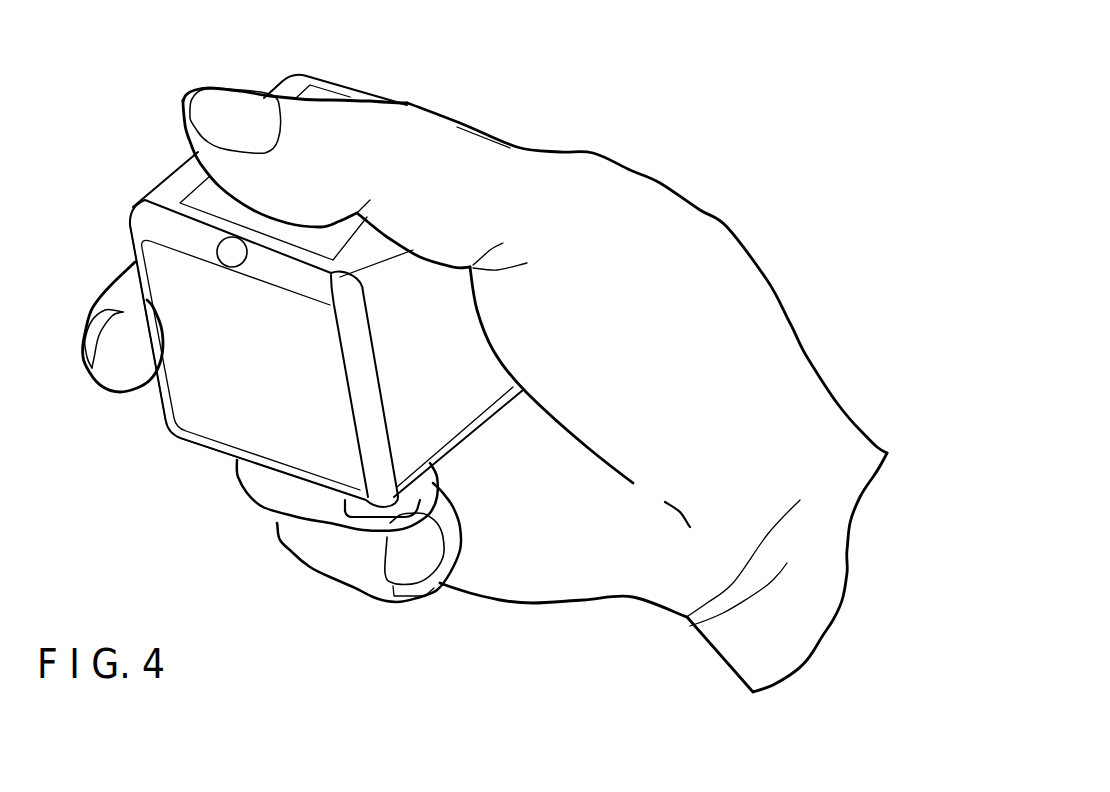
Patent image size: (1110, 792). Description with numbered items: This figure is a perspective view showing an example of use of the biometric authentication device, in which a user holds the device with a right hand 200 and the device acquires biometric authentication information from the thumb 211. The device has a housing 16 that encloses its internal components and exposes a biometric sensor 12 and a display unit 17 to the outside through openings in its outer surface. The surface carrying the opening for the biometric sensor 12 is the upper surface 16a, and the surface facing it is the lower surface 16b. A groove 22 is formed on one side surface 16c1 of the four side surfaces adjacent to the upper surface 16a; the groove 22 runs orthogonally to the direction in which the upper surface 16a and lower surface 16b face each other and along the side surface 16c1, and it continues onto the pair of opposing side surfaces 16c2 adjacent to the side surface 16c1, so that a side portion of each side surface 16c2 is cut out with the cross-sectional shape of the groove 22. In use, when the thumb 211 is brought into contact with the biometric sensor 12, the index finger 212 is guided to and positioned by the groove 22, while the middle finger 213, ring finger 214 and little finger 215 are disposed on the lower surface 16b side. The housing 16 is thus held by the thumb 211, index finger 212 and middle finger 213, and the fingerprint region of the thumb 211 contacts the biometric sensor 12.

The biometric sensor 12 is at (323, 242).
The housing 16 is at (450, 420).
The upper surface 16a is at (187, 187).
The lower surface 16b is at (181, 442).
The side surface 16c1 is at (132, 243).
The side surface 16c2 is at (220, 423).
The display unit 17 is at (220, 245).
The groove 22 is at (163, 345).
The right hand 200 is at (767, 281).
The thumb 211 is at (403, 113).
The index finger 212 is at (117, 300).
The middle finger 213 is at (287, 495).
The ring finger 214 is at (327, 547).
The little finger 215 is at (370, 593).